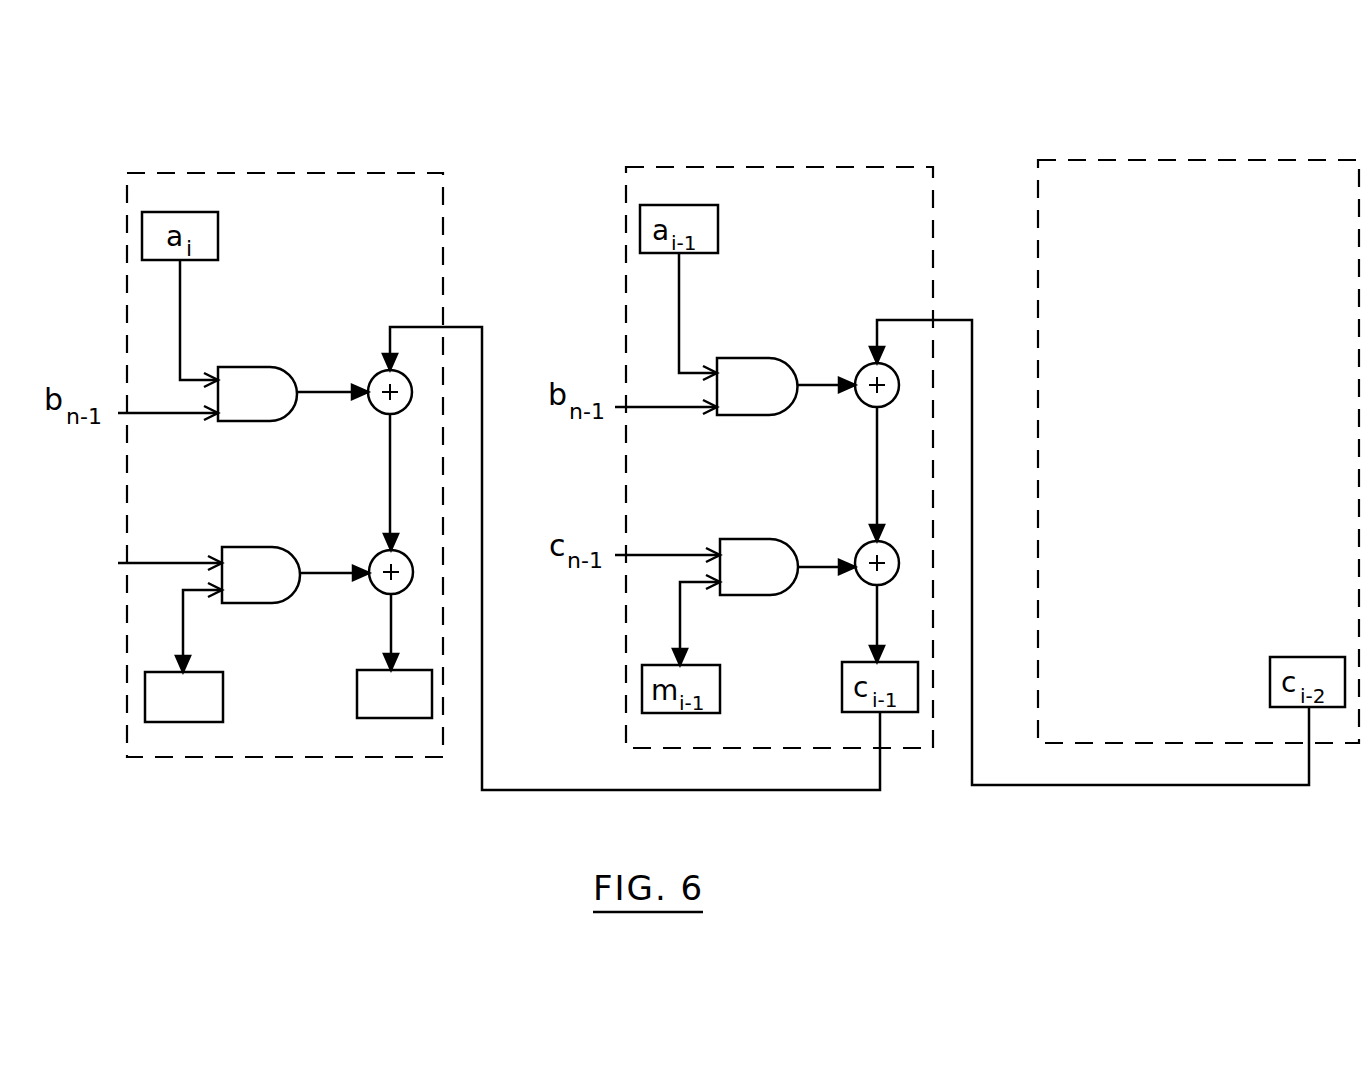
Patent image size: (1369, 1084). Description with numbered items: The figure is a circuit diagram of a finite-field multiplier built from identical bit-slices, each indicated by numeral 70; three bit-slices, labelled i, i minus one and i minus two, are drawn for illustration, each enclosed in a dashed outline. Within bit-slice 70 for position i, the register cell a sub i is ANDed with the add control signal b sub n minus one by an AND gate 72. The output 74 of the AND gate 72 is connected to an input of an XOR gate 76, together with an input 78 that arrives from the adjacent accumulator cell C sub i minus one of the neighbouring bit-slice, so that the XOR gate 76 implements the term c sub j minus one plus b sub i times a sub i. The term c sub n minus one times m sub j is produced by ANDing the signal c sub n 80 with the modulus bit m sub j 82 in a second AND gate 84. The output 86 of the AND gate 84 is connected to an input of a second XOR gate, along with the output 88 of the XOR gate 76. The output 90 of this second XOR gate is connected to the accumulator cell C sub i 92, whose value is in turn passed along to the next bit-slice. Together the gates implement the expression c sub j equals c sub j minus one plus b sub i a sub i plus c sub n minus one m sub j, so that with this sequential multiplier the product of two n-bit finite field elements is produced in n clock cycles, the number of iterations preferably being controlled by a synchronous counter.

The bit-slice 70 is at (200, 760).
The AND gate 72 is at (262, 380).
The output of the AND gate 74 is at (322, 395).
The XOR gate 76 is at (410, 383).
The input from adjacent cell C_{i-1} 78 is at (415, 327).
The signal c_n 80 is at (163, 565).
The m_j cell 82 is at (147, 698).
The AND gate 84 is at (413, 565).
The output of the AND gate 86 is at (318, 578).
The output of XOR gate 88 is at (393, 480).
The output of XOR gate 90 is at (393, 625).
The cell C_i 92 is at (415, 718).